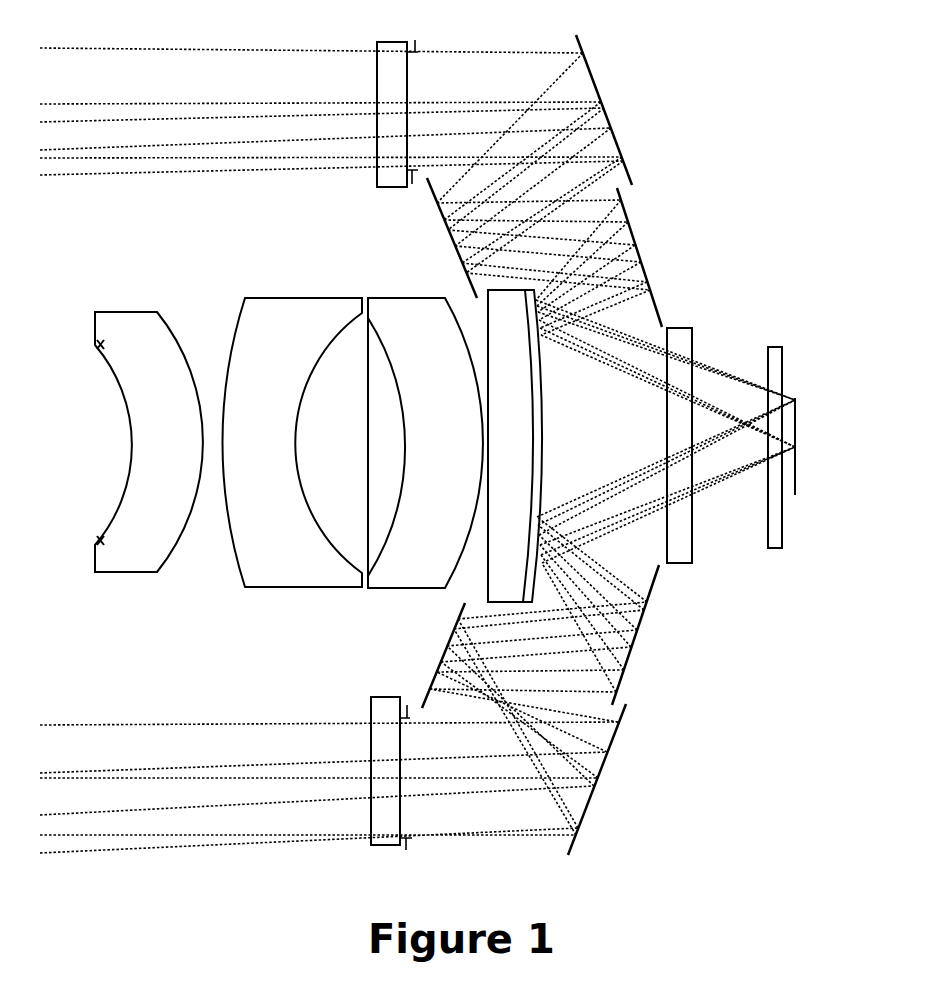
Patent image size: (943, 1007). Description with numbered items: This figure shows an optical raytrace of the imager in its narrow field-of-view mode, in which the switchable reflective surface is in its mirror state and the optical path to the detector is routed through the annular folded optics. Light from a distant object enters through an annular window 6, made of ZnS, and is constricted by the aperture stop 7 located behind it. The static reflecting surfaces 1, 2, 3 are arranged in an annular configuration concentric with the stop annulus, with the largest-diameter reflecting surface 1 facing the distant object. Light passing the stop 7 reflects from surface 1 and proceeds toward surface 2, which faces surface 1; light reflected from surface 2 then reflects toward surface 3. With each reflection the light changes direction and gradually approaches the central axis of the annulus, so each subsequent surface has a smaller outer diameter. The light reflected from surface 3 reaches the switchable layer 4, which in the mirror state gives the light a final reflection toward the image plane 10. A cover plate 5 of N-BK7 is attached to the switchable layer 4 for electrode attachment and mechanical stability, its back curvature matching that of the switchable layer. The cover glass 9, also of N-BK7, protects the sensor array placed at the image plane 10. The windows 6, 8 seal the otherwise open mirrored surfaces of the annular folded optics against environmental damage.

The reflecting surface 1 is at (613, 98).
The reflecting surface 2 is at (445, 243).
The reflecting surface 3 is at (640, 220).
The switchable layer 4 is at (523, 563).
The cover plate 5 is at (533, 365).
The annular window 6 is at (383, 195).
The aperture stop 7 is at (359, 445).
The window 8 is at (688, 315).
The cover glass 9 is at (780, 552).
The image plane 10 is at (796, 392).